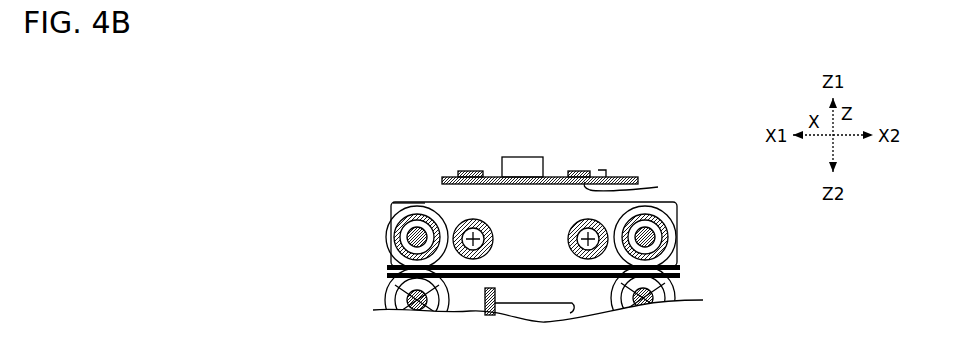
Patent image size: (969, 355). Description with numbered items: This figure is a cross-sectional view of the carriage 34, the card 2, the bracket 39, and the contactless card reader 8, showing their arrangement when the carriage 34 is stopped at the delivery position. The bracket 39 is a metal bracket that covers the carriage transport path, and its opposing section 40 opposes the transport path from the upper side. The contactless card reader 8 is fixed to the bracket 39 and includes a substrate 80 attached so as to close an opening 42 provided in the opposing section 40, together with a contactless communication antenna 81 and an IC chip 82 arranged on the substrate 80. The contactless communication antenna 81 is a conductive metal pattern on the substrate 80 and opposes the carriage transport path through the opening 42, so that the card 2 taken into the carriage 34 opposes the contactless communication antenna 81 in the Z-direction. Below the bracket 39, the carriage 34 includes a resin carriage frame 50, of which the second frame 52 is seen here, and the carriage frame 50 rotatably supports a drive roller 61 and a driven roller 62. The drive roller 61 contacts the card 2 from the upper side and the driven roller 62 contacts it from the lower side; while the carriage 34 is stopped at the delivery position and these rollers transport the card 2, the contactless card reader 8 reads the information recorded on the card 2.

The card 2 is at (668, 262).
The contactless card reader 8 is at (541, 127).
The carriage 34 is at (368, 248).
The bracket 39 is at (618, 177).
The opposing section 40 is at (588, 160).
The opening 42 is at (635, 187).
The carriage frame 50 is at (405, 203).
The second frame 52 is at (360, 183).
The drive roller 61 is at (390, 236).
The driven roller 62 is at (395, 290).
The substrate 80 is at (608, 144).
The contactless communication antenna 81 is at (582, 170).
The IC chip 82 is at (517, 157).